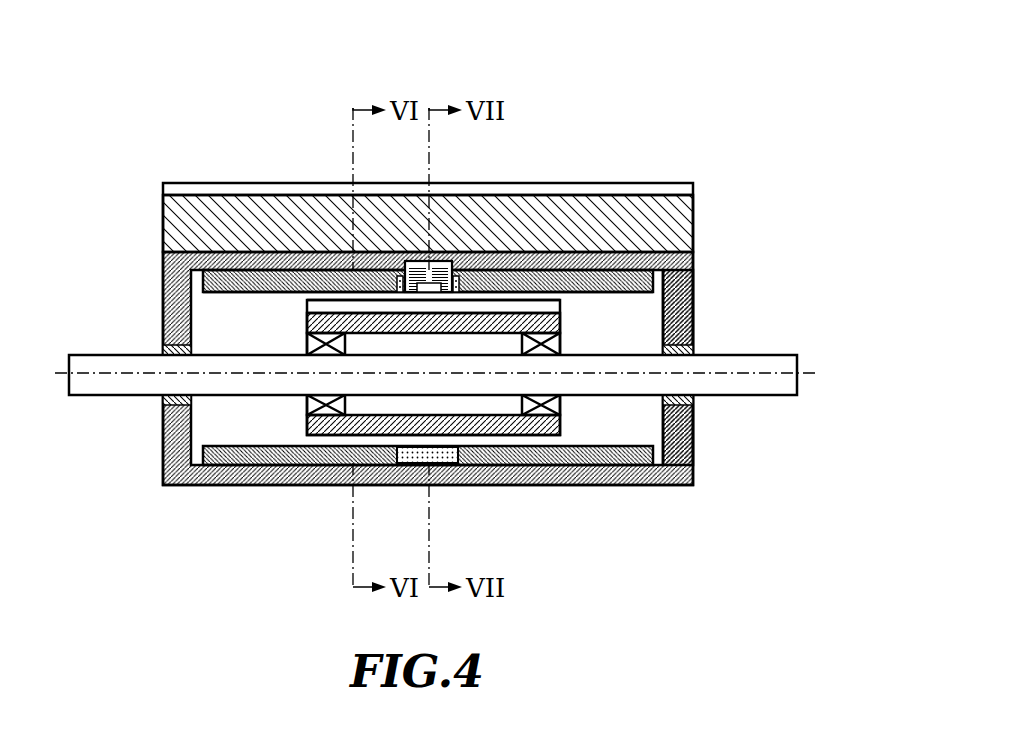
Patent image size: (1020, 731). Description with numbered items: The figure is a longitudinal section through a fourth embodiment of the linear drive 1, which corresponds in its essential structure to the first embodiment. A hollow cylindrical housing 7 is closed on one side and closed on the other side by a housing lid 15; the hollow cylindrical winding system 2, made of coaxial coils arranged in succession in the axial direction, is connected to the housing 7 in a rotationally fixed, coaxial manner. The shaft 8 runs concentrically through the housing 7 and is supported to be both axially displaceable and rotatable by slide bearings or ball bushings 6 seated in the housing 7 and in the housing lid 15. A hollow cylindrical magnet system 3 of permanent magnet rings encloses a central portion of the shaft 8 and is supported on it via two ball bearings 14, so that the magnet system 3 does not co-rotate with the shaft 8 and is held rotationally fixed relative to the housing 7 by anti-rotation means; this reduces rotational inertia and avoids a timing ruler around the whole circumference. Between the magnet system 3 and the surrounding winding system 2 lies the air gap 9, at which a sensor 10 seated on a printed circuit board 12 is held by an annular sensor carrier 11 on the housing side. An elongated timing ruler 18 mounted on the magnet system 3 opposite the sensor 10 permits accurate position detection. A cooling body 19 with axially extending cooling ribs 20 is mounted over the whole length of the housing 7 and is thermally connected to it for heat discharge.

The linear drive 1 is at (634, 148).
The winding system 2 is at (267, 453).
The magnet system 3 is at (323, 433).
The slide bearings or ball bushings 6 is at (165, 350).
The housing 7 is at (212, 470).
The shaft 8 is at (128, 387).
The air gap 9 is at (515, 297).
The sensor 10 is at (430, 260).
The sensor carrier 11 is at (478, 270).
The printed circuit board 12 is at (415, 260).
The ball bearings 14 is at (543, 413).
The housing lid 15 is at (670, 447).
The timing ruler 18 is at (543, 307).
The cooling body 19 is at (647, 227).
The cooling ribs 20 is at (237, 191).